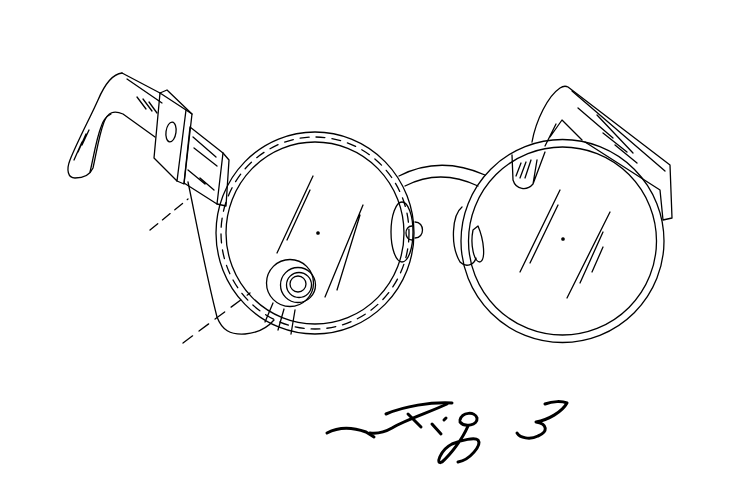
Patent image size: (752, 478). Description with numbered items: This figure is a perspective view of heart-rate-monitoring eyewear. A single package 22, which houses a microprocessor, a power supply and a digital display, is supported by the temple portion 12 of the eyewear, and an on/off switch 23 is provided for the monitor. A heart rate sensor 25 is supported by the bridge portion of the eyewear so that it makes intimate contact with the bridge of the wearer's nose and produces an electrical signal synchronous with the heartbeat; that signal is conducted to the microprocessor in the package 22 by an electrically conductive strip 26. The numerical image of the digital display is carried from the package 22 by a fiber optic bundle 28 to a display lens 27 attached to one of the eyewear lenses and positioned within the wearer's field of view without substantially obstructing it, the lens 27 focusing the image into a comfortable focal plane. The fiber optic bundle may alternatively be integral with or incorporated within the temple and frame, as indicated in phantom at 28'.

The temple portion 12 is at (147, 128).
The microprocessor and power supply package 22 is at (187, 105).
The on/off switch 23 is at (171, 122).
The heart rate sensor 25 is at (404, 262).
The electrically conductive strip 26 is at (342, 143).
The display lens 27 is at (299, 306).
The fiber optic bundle 28 is at (184, 264).
The fiber optic bundle (phantom, integral) 28' is at (177, 289).